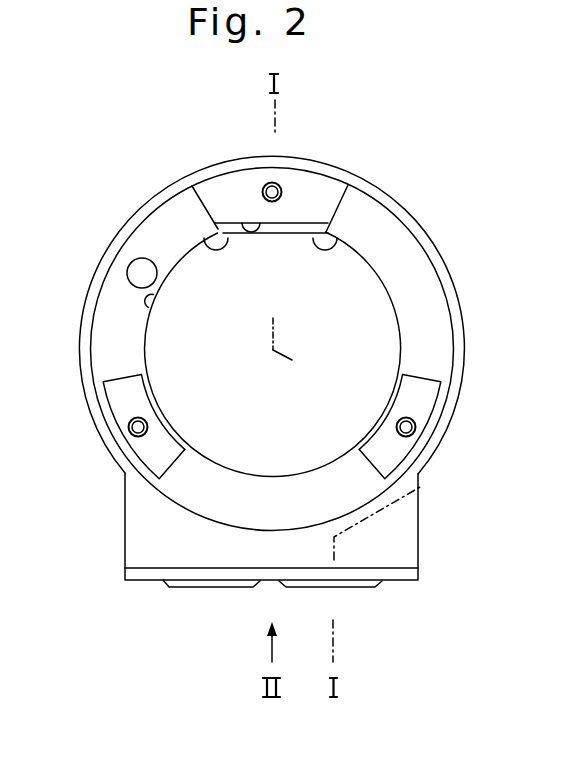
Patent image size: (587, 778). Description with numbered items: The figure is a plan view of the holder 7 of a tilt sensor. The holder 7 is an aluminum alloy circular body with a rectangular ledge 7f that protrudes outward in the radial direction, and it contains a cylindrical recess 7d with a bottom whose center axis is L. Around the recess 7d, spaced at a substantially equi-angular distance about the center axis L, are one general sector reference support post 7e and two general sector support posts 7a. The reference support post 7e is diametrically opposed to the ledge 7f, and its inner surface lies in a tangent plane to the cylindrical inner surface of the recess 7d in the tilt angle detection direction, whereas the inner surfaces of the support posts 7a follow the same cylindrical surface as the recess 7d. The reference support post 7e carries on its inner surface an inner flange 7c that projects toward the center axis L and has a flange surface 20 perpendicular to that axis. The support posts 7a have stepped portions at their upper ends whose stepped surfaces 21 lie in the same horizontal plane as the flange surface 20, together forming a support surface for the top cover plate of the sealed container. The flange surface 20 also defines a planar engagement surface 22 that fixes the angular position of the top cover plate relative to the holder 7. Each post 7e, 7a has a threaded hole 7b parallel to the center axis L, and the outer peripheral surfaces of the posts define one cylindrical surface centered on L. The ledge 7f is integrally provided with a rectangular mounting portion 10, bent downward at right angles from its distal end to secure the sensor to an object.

The holder 7 is at (462, 293).
The support post 7a is at (118, 394).
The threaded hole 7b is at (278, 186).
The inner flange 7c is at (193, 239).
The cylindrical recess 7d is at (152, 308).
The reference support post 7e is at (333, 187).
The ledge 7f is at (145, 529).
The mounting portion 10 is at (400, 583).
The flange surface 20 is at (333, 237).
The stepped surface 21 is at (170, 453).
The engagement surface 22 is at (238, 221).
The center axis L is at (275, 347).